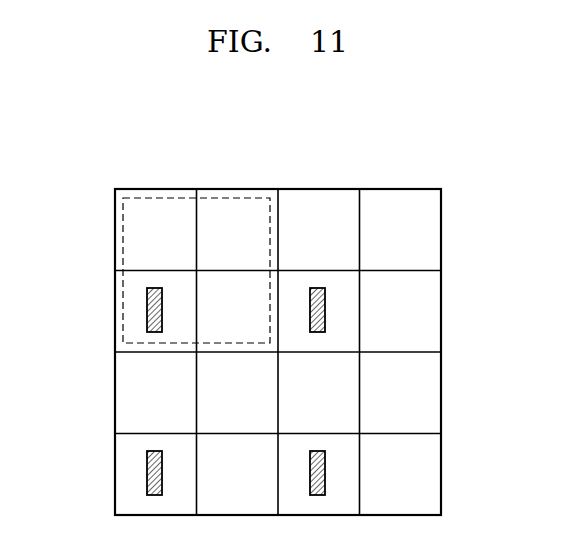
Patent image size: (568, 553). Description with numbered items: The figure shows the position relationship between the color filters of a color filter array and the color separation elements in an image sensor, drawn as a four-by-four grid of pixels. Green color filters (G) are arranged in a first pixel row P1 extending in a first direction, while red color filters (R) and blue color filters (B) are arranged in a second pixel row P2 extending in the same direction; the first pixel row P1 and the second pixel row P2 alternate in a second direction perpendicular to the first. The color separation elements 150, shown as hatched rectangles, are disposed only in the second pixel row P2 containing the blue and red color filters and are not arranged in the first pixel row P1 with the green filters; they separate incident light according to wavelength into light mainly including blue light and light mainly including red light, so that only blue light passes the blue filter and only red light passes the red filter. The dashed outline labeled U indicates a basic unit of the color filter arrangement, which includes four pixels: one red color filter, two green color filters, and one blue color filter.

The color separation element 150 is at (325, 328).
The basic unit of the color filter arrangement U is at (240, 197).
The first pixel row P1 is at (215, 312).
The second pixel row P2 is at (214, 394).